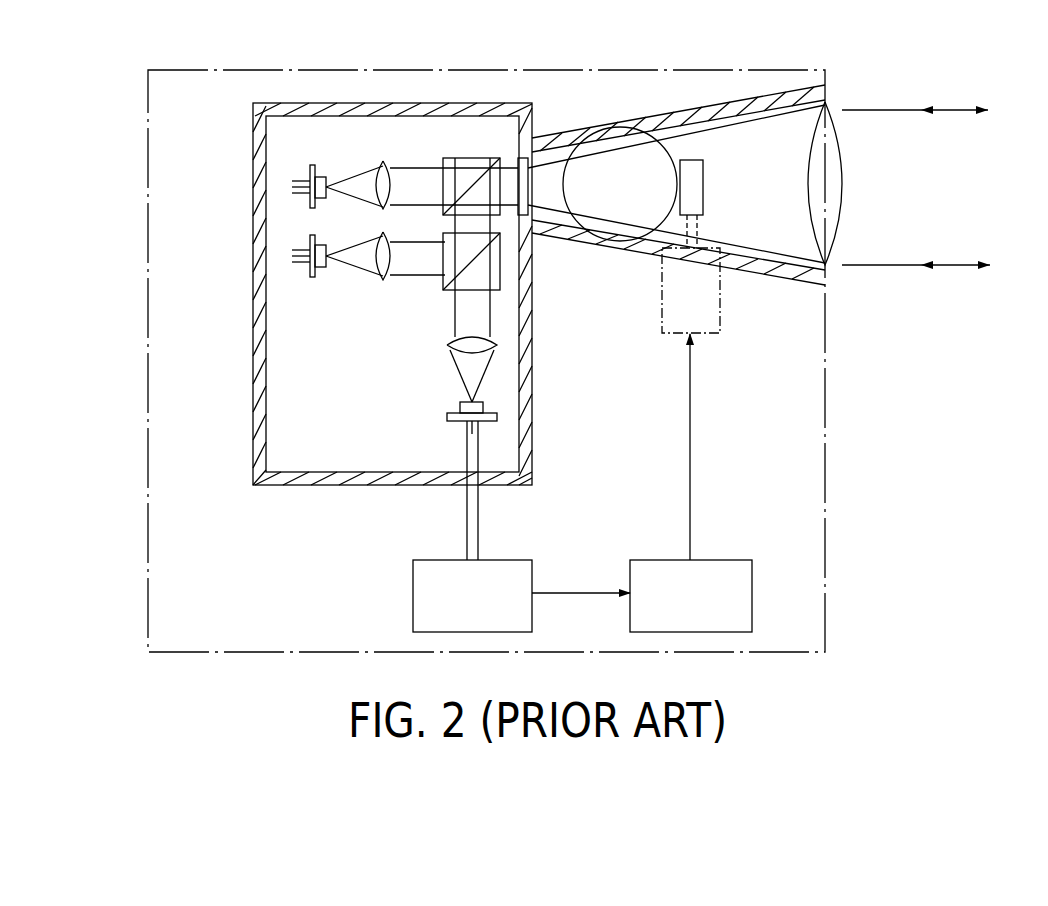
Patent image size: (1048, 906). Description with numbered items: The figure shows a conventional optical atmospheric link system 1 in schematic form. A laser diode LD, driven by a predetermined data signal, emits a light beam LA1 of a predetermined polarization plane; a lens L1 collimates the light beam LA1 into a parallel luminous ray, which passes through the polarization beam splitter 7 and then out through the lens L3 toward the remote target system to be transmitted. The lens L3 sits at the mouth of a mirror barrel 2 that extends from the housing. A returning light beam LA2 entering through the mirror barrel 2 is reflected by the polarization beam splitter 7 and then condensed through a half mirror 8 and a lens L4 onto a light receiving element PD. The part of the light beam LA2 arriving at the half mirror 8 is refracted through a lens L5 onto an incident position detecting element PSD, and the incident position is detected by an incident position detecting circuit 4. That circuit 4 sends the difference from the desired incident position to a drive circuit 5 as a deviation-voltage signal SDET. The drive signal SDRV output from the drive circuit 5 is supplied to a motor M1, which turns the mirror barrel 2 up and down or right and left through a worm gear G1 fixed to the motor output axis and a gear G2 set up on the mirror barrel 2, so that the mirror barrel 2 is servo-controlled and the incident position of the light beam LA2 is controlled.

The optical atmospheric link system 1 is at (226, 37).
The mirror barrel 2 is at (777, 87).
The incident position detecting circuit 4 is at (512, 560).
The drive circuit 5 is at (728, 560).
The polarization beam splitter 7 is at (450, 186).
The half mirror 8 is at (447, 262).
The laser diode LD is at (312, 165).
The lens L1 is at (383, 160).
The light receiving element PD is at (312, 277).
The lens L4 is at (383, 290).
The lens L5 is at (447, 345).
The incident position detecting element PSD is at (447, 414).
The worm gear G1 is at (705, 174).
The gear G2 is at (687, 147).
The motor M1 is at (722, 310).
The lens L3 is at (838, 143).
The light beam LA1 is at (981, 108).
The light beam LA2 is at (922, 108).
The deviation-voltage signal SDET is at (575, 592).
The drive signal SDRV is at (690, 414).